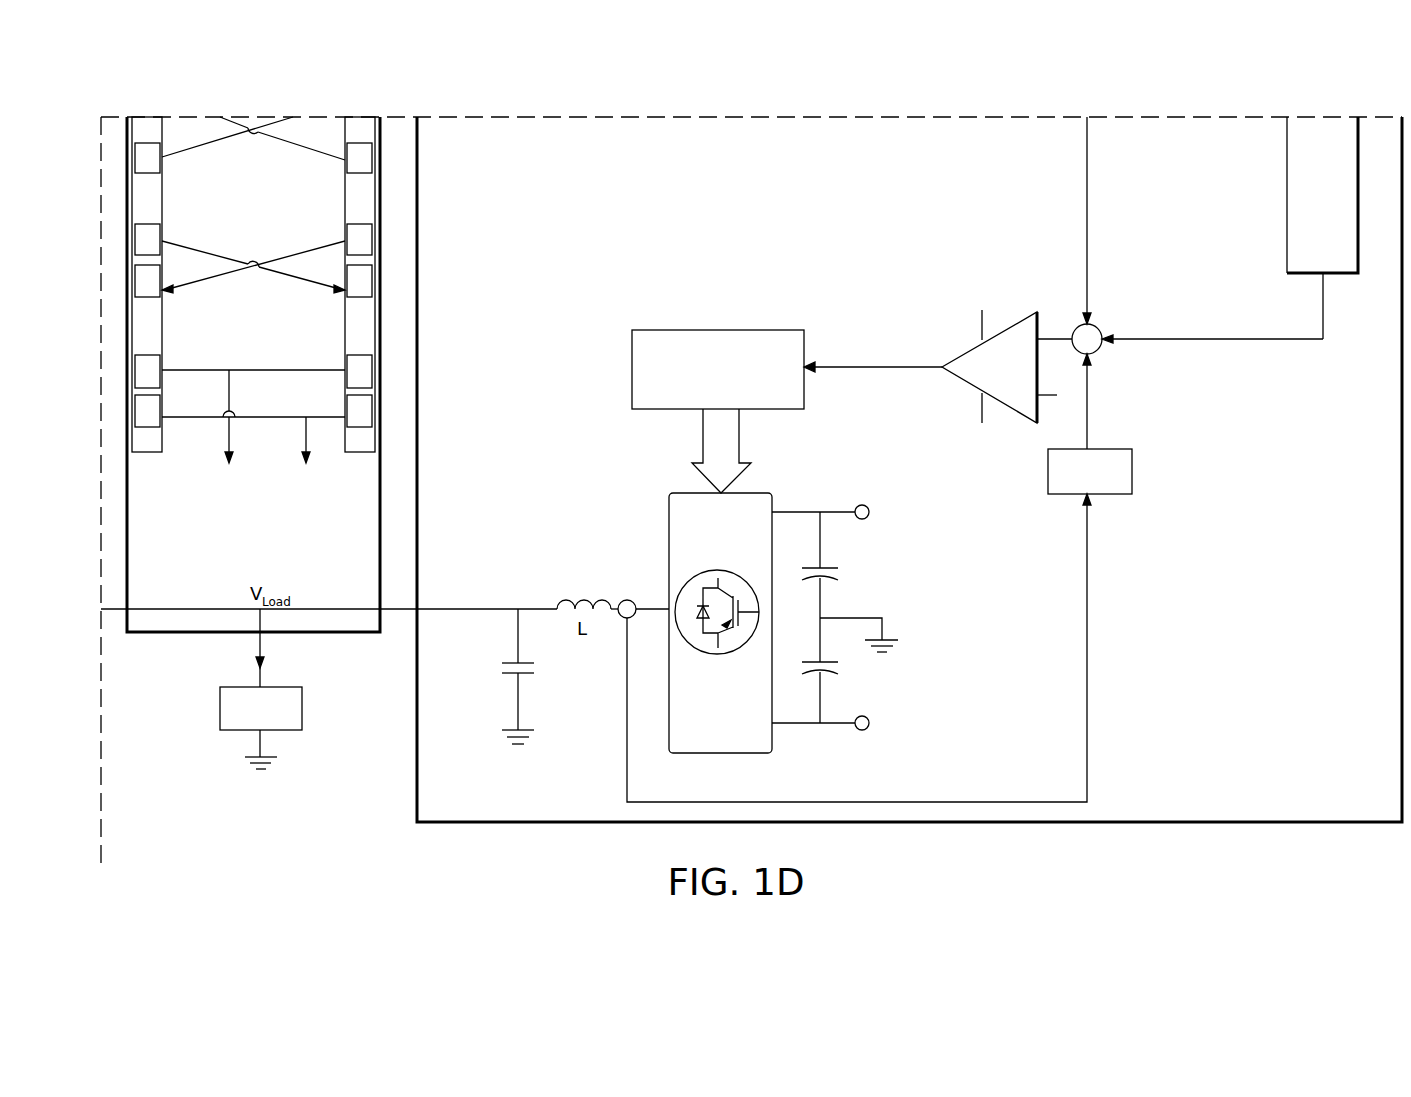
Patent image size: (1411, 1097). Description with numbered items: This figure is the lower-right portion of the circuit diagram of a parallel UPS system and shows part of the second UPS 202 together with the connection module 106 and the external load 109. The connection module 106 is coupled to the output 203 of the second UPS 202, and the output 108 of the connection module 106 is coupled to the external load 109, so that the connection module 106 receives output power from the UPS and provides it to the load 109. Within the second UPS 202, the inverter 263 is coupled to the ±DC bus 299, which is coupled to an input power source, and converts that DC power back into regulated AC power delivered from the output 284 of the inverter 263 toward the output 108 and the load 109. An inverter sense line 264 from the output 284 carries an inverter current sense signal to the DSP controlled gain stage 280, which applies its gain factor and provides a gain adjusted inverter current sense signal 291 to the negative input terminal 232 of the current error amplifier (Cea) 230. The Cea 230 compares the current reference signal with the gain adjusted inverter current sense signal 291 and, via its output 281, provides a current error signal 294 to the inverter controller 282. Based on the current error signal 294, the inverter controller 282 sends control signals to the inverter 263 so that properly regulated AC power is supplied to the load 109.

The connection module 106 is at (253, 374).
The output of the connection module 108 is at (257, 639).
The external load 109 is at (219, 708).
The second UPS 202 is at (909, 469).
The output of the second UPS 203 is at (445, 592).
The output of the inverter 284 is at (504, 611).
The inverter sense line 264 is at (627, 640).
The ±DC bus 299 is at (864, 520).
The inverter controller 282 is at (661, 410).
The current error signal 294 is at (814, 362).
The output of the Cea 281 is at (942, 368).
The current error amplifier (Cea) 230 is at (1013, 412).
The negative input terminal of the Cea 232 is at (1053, 335).
The gain adjusted inverter current sense signal 291 is at (1092, 402).
The DSP controlled gain stage 280 is at (1133, 476).
The inverter 263 is at (799, 768).